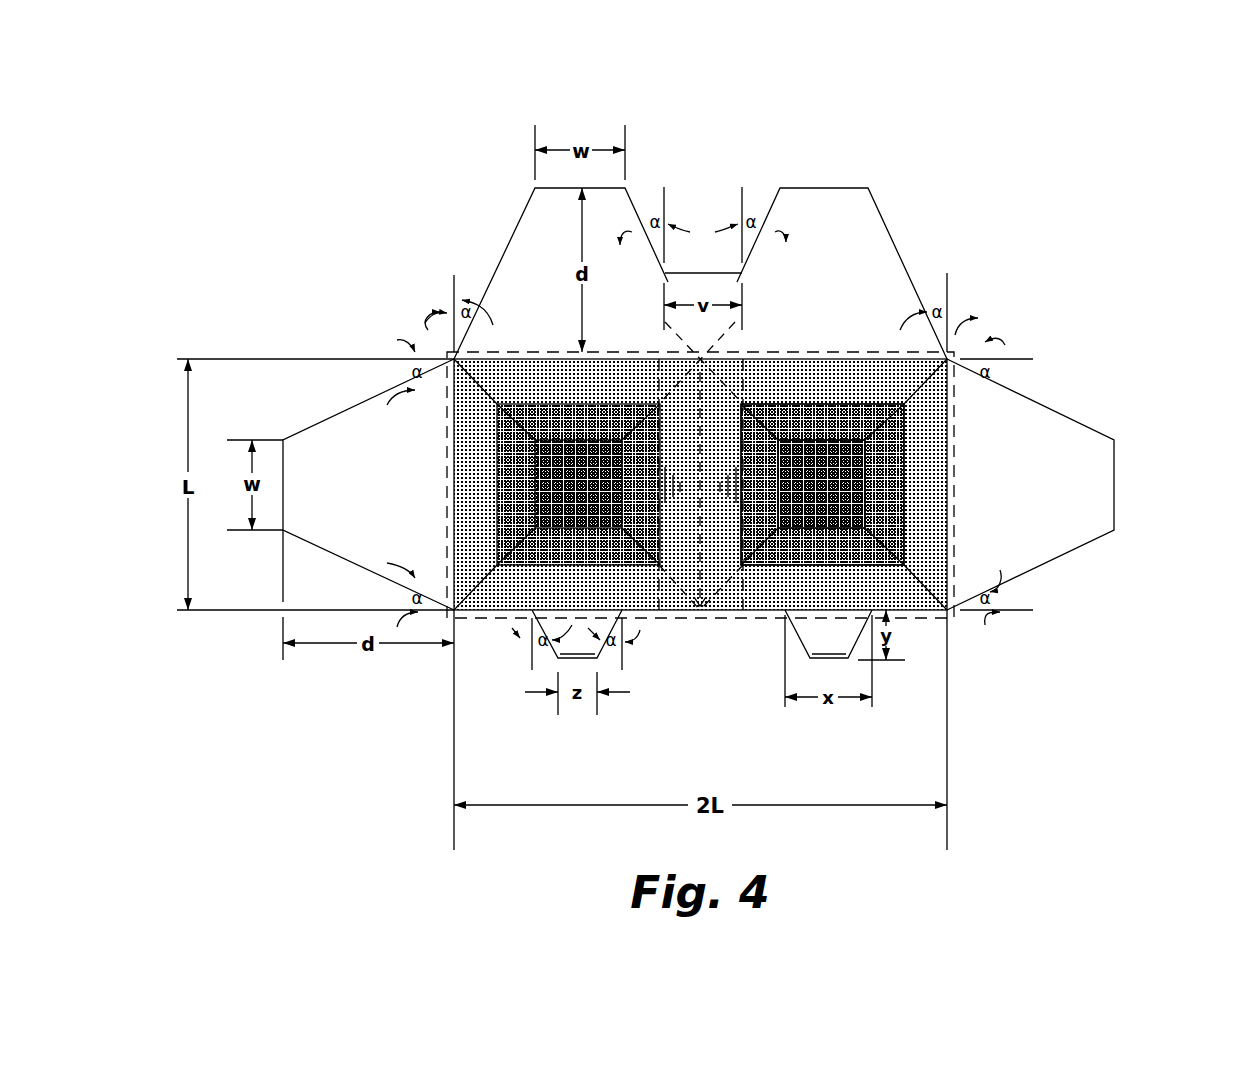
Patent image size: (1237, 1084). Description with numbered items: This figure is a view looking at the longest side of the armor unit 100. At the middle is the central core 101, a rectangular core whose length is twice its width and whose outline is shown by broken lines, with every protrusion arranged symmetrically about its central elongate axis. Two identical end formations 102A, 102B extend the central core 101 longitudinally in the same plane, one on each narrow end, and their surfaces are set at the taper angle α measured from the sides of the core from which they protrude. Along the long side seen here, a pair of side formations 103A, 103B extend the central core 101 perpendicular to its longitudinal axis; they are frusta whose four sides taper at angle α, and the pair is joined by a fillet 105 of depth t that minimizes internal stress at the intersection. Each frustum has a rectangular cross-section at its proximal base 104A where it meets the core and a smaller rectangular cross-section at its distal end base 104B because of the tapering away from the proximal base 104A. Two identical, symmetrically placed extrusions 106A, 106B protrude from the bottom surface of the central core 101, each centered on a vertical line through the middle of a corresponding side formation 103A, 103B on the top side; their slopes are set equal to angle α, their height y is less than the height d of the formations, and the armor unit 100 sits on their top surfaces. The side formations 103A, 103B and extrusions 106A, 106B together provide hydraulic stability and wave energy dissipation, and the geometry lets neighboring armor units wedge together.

The armor unit 100 is at (404, 138).
The central core 101 is at (956, 444).
The end formation 102A is at (1082, 420).
The end formation 102B is at (345, 408).
The side formation 103A is at (875, 243).
The side formation 103B is at (538, 265).
The proximal base 104A is at (950, 505).
The distal end base 104B is at (836, 512).
The fillet 105 is at (722, 376).
The extrusion 106A is at (812, 648).
The extrusion 106B is at (600, 658).